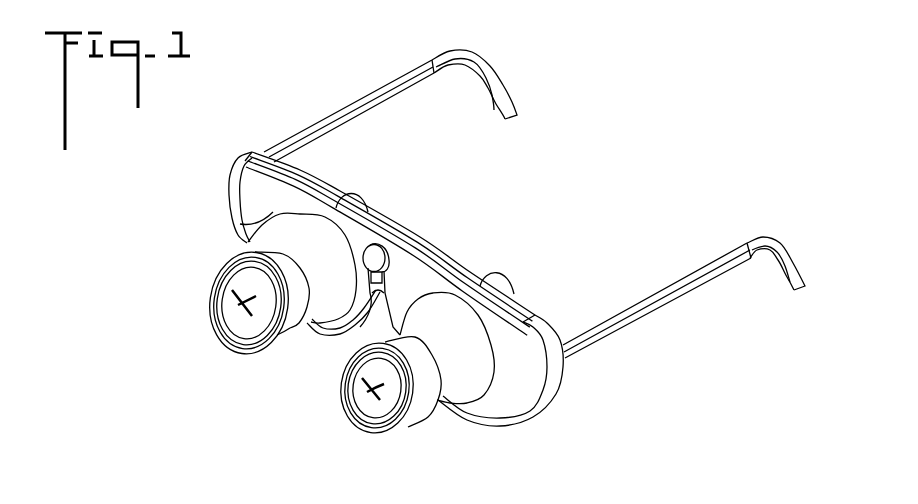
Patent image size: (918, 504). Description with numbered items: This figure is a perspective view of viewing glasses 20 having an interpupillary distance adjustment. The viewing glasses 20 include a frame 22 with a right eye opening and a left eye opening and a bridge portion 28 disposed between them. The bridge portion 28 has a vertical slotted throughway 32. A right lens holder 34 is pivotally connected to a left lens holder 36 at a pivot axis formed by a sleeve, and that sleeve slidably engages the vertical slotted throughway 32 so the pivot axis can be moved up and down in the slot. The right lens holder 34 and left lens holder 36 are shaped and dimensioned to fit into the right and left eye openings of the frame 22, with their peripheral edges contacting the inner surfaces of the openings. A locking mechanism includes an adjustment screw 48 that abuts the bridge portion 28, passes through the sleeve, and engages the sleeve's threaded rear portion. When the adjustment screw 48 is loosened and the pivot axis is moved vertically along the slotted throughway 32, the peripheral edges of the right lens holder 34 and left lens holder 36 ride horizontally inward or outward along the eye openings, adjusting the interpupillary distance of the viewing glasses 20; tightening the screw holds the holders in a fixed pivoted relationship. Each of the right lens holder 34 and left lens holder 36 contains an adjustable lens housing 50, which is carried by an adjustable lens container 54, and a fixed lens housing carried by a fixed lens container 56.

The viewing glasses 20 is at (631, 80).
The frame 22 is at (234, 174).
The bridge portion 28 is at (392, 262).
The vertical slotted throughway 32 is at (383, 278).
The right lens holder 34 is at (240, 224).
The left lens holder 36 is at (508, 390).
The adjustment screw 48 is at (373, 252).
The adjustable lens housing 50 is at (286, 330).
The adjustable lens container 54 is at (333, 290).
The fixed lens container 56 is at (364, 198).